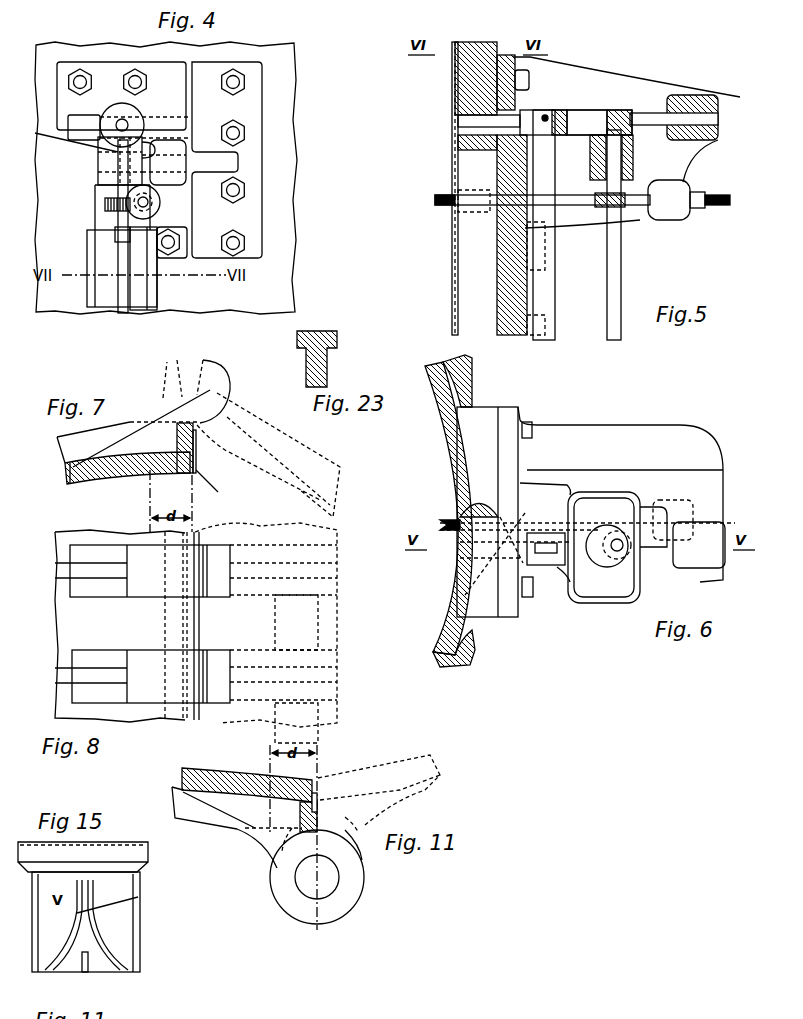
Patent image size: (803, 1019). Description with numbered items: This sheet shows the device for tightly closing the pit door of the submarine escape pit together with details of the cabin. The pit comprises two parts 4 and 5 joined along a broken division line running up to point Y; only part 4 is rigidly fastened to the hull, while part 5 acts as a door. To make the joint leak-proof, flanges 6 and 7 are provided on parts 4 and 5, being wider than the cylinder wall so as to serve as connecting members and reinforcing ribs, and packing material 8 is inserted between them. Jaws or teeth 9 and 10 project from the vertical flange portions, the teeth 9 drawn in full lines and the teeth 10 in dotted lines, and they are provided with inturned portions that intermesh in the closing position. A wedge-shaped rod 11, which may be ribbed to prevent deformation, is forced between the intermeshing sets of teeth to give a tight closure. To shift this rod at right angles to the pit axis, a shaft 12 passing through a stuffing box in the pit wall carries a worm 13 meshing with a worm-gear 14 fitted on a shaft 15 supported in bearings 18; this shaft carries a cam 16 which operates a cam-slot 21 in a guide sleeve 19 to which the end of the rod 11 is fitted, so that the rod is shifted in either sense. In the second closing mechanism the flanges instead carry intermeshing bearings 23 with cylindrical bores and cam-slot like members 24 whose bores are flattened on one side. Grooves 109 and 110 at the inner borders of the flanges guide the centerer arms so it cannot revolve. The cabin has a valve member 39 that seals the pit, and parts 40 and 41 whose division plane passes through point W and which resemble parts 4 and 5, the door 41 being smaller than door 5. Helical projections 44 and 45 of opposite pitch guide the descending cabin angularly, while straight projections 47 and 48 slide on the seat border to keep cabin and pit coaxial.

In FIG. 4, the pit part 4 is at (42, 98).
In FIG. 5, the pit part 4 is at (479, 50).
In FIG. 6, the pit part 4 is at (452, 447).
In FIG. 7, the pit part 4 is at (102, 475).
In FIG. 8, the pit part 4 is at (68, 630).
In FIG. 11, the pit part 4 is at (228, 775).
In FIG. 4, the pit part 5 is at (42, 172).
In FIG. 7, the pit part 5 is at (270, 485).
In FIG. 8, the pit part 5 is at (318, 613).
In FIG. 11, the pit part 5 is at (400, 760).
In FIG. 7, the flange 6 is at (177, 439).
In FIG. 11, the flange 6 is at (300, 816).
In FIG. 7, the flange 7 is at (205, 438).
In FIG. 11, the flange 7 is at (340, 815).
In FIG. 7, the packing material 8 is at (200, 472).
In FIG. 11, the packing material 8 is at (318, 797).
In FIG. 4, the teeth 9 is at (105, 218).
In FIG. 6, the teeth 9 is at (548, 565).
In FIG. 7, the teeth 9 is at (215, 382).
In FIG. 8, the teeth 9 is at (215, 555).
In FIG. 4, the teeth 10 is at (140, 258).
In FIG. 5, the teeth 10 is at (545, 250).
In FIG. 6, the teeth 10 is at (545, 535).
In FIG. 7, the teeth 10 is at (175, 383).
In FIG. 8, the teeth 10 is at (165, 621).
In FIG. 4, the wedge-shaped rod 11 is at (130, 305).
In FIG. 5, the wedge-shaped rod 11 is at (545, 293).
In FIG. 6, the wedge-shaped rod 11 is at (549, 555).
In FIG. 23, the wedge-shaped rod 11 is at (302, 366).
In FIG. 4, the shaft 12 is at (152, 207).
In FIG. 5, the shaft 12 is at (453, 205).
In FIG. 6, the shaft 12 is at (455, 522).
In FIG. 4, the worm 13 is at (152, 203).
In FIG. 5, the worm 13 is at (612, 212).
In FIG. 6, the worm 13 is at (615, 535).
In FIG. 4, the worm-gear 14 is at (105, 203).
In FIG. 5, the worm-gear 14 is at (622, 207).
In FIG. 4, the shaft 15 is at (115, 235).
In FIG. 5, the shaft 15 is at (621, 292).
In FIG. 5, the cam 16 is at (592, 118).
In FIG. 6, the cam 16 is at (585, 556).
In FIG. 4, the bearings 18 is at (108, 150).
In FIG. 5, the bearings 18 is at (633, 155).
In FIG. 4, the sleeve 19 is at (130, 111).
In FIG. 5, the sleeve 19 is at (458, 140).
In FIG. 6, the sleeve 19 is at (716, 560).
In FIG. 5, the cam-slot 21 is at (562, 110).
In FIG. 6, the cam-slot 21 is at (638, 580).
In FIG. 11, the bearing 23 is at (350, 880).
In FIG. 11, the cam-slot like member 24 is at (294, 876).
In FIG. 15, the valve member 39 is at (138, 866).
In FIG. 15, the cabin part 40 is at (38, 930).
In FIG. 15, the cabin door 41 is at (127, 916).
In FIG. 15, the helical projection 44 is at (68, 950).
In FIG. 15, the helical projection 45 is at (103, 950).
In FIG. 15, the straight projection 47 is at (140, 891).
In FIG. 15, the straight projection 48 is at (90, 970).
In FIG. 11, the groove 109 is at (316, 775).
In FIG. 5, the groove 110 is at (455, 299).
In FIG. 6, the groove 110 is at (462, 549).
In FIG. 7, the groove 110 is at (192, 470).
In FIG. 4, the point Y is at (115, 158).
In FIG. 5, the point Y is at (480, 155).
In FIG. 15, the point W is at (140, 897).